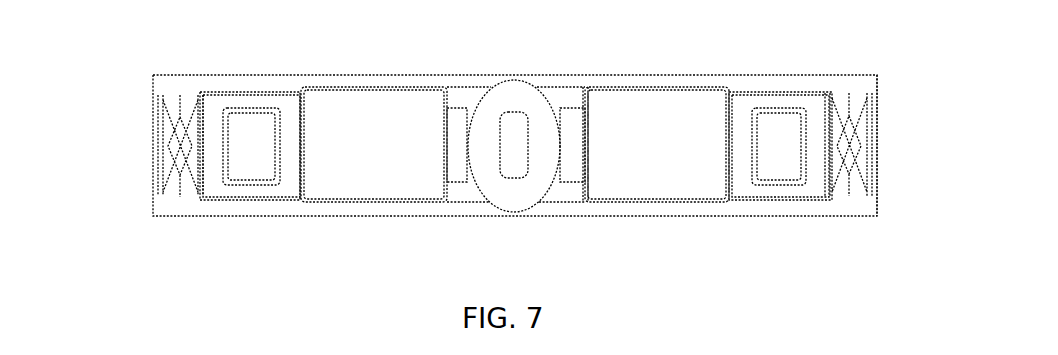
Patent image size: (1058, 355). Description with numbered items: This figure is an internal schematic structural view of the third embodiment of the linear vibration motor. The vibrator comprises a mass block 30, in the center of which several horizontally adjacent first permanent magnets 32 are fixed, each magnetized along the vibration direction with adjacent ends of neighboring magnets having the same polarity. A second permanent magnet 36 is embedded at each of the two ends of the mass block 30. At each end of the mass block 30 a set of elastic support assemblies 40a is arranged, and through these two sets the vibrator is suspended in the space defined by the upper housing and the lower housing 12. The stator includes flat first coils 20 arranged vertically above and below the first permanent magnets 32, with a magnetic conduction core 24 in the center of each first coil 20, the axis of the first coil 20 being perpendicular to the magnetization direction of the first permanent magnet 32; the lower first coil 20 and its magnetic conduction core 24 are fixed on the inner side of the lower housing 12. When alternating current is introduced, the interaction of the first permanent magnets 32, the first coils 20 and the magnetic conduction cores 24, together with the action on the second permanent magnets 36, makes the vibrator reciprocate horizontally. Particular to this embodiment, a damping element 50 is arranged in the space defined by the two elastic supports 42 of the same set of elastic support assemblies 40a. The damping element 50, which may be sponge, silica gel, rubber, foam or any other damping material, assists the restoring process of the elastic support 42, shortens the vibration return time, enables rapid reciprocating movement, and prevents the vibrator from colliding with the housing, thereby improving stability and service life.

The lower housing 12 is at (249, 82).
The first coil 20 is at (518, 93).
The magnetic conduction core 24 is at (509, 173).
The mass block 30 is at (378, 157).
The first permanent magnet 32 is at (569, 130).
The second permanent magnet 36 is at (773, 123).
The elastic support assembly 40a is at (149, 139).
The elastic support 42 is at (875, 122).
The damping element 50 is at (868, 148).